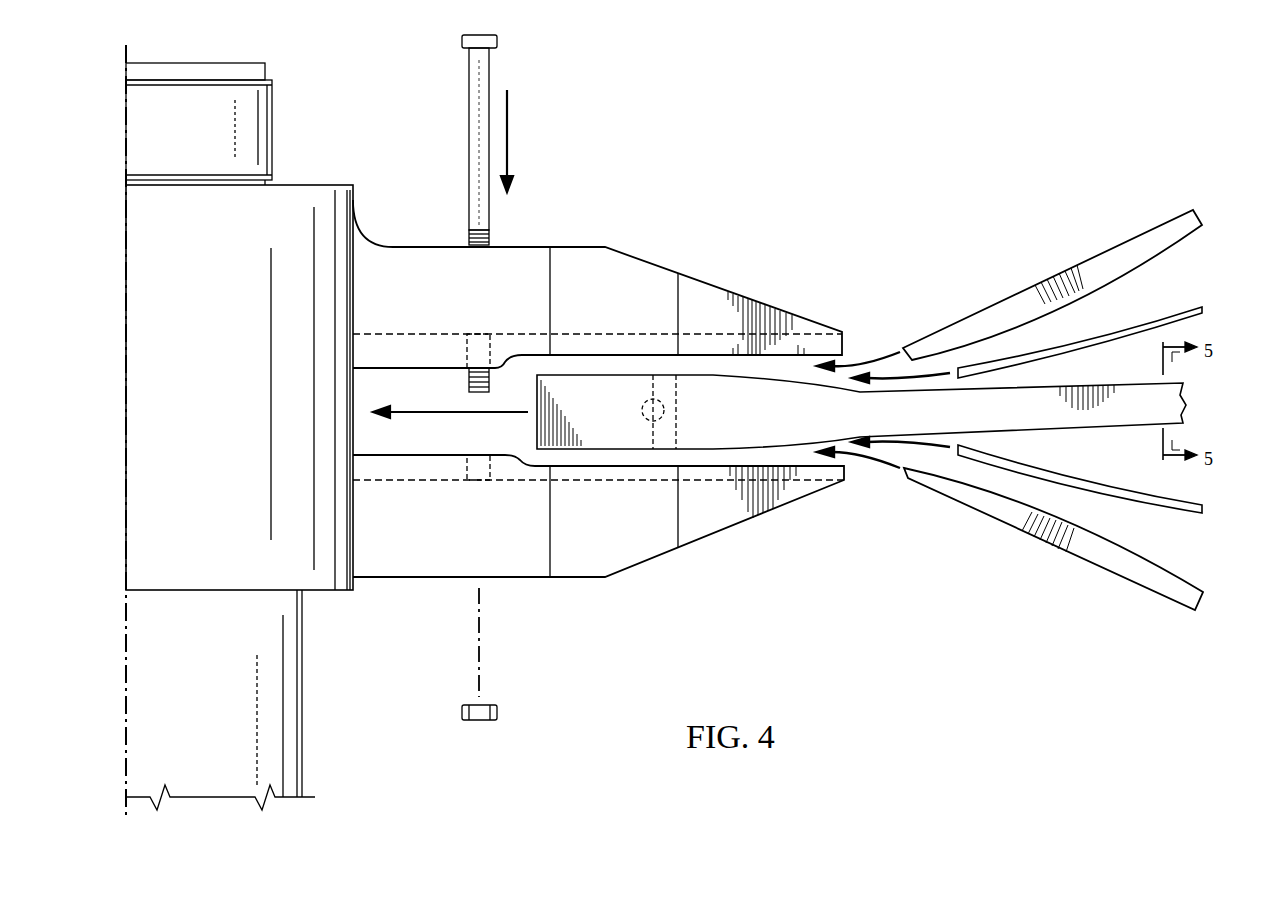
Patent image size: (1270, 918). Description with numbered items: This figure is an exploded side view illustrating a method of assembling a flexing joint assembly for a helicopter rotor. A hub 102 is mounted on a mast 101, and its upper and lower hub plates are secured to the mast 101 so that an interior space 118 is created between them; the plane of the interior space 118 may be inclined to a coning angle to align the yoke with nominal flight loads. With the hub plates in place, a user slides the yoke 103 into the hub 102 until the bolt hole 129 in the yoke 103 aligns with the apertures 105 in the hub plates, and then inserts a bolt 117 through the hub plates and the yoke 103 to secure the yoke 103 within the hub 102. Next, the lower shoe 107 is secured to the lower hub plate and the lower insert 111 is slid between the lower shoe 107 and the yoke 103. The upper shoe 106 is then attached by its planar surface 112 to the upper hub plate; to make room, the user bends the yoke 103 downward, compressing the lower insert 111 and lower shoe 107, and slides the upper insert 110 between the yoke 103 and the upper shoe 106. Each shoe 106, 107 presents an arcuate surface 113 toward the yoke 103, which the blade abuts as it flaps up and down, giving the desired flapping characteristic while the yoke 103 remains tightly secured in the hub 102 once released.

The mast 101 is at (132, 128).
The hub 102 is at (275, 130).
The yoke 103 is at (1040, 428).
The aperture 105 is at (478, 340).
The upper shoe 106 is at (1015, 290).
The lower shoe 107 is at (1010, 535).
The upper insert 110 is at (1082, 340).
The lower insert 111 is at (1075, 480).
The planar surface 112 is at (1100, 252).
The arcuate surface 113 is at (1133, 272).
The bolt 117 is at (468, 120).
The interior space 118 is at (517, 447).
The bolt hole 129 is at (648, 398).